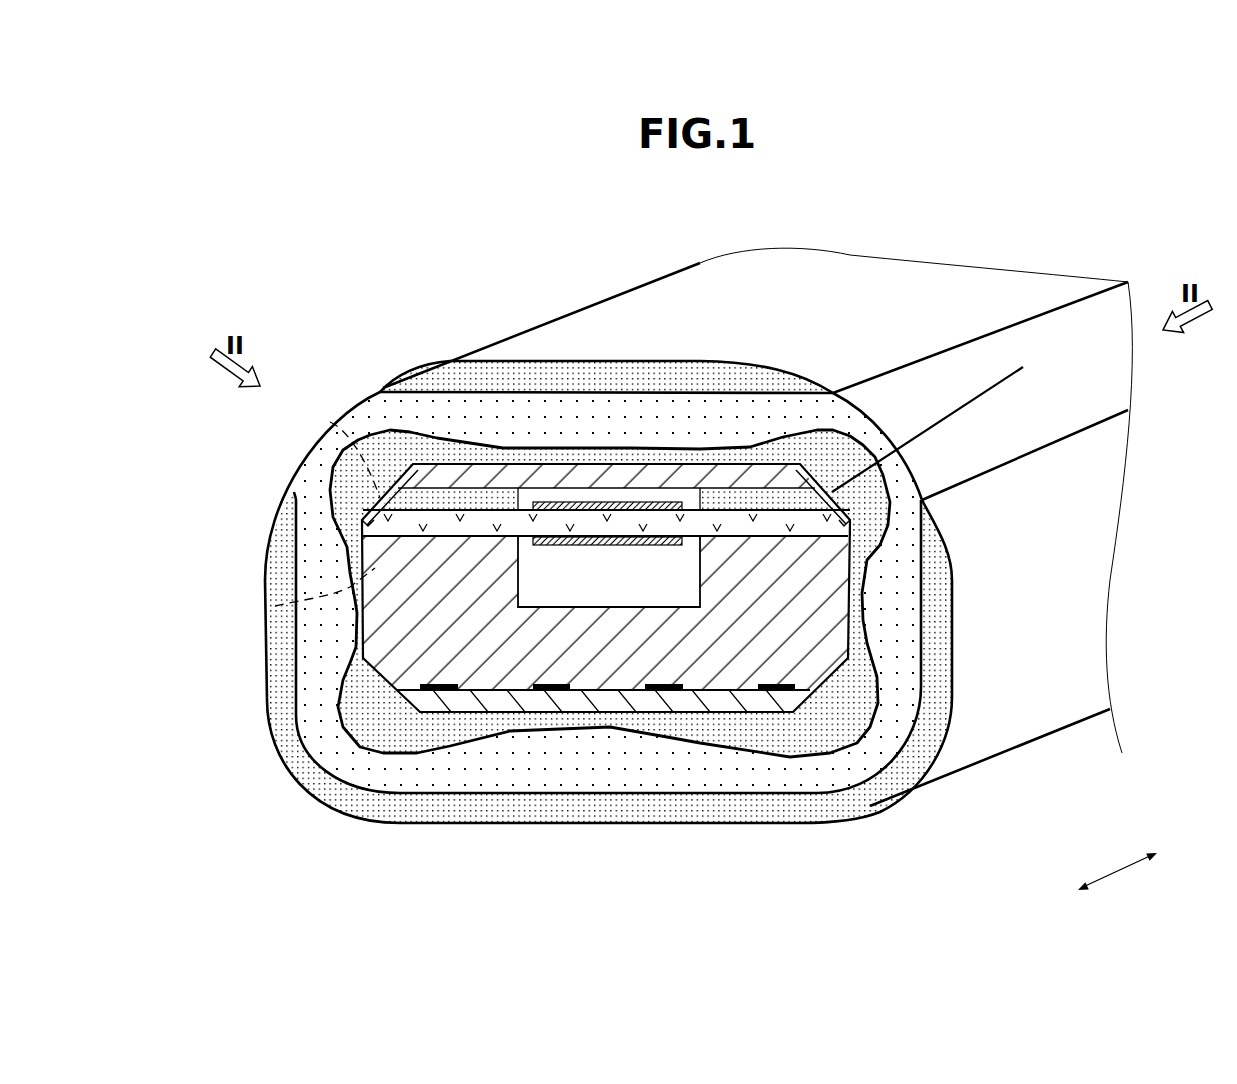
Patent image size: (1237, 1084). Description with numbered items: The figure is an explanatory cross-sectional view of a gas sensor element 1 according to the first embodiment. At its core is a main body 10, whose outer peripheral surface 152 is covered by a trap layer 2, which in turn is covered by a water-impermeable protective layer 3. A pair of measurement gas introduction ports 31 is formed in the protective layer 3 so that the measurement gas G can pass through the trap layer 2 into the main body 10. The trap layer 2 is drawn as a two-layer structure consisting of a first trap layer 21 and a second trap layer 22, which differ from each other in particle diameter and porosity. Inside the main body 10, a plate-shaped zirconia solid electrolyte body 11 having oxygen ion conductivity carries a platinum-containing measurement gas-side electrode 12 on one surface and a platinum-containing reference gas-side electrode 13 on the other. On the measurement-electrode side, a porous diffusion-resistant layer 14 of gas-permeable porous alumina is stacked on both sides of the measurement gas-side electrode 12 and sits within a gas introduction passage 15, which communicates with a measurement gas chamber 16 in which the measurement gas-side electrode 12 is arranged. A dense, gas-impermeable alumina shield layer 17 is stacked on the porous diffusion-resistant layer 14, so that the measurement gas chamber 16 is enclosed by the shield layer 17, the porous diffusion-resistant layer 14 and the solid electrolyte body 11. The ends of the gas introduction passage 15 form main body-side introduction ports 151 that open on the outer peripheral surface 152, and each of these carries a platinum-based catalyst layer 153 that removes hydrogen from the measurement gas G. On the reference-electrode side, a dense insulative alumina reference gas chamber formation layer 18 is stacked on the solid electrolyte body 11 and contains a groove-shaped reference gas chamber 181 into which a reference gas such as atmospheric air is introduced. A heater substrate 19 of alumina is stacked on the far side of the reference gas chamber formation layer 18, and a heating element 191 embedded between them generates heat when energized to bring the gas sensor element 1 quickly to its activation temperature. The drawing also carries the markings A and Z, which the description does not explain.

The gas sensor element 1 is at (343, 300).
The trap layer 2 is at (589, 386).
The protective layer 3 is at (703, 355).
The measurement gas introduction ports 31 is at (295, 490).
The main body 10 is at (508, 455).
The solid electrolyte body 11 is at (733, 525).
The measurement gas-side electrode 12 is at (557, 503).
The reference gas-side electrode 13 is at (562, 578).
The porous diffusion-resistant layer 14 is at (450, 503).
The gas introduction passage 15 is at (275, 606).
The main body-side introduction ports 151 is at (330, 422).
The outer peripheral surface 152 is at (850, 548).
The catalyst layer 153 is at (805, 500).
The measurement gas chamber 16 is at (623, 495).
The shield layer 17 is at (677, 478).
The reference gas chamber formation layer 18 is at (818, 618).
The reference gas chamber 181 is at (530, 691).
The heater substrate 19 is at (720, 703).
The heating element 191 is at (665, 697).
The first trap layer 21 is at (327, 713).
The second trap layer 22 is at (345, 725).
The region A is at (680, 590).
The measurement gas G is at (977, 397).
The Z direction Z is at (1117, 866).